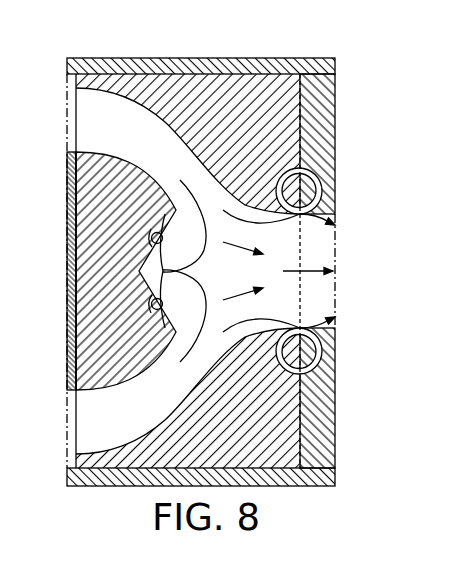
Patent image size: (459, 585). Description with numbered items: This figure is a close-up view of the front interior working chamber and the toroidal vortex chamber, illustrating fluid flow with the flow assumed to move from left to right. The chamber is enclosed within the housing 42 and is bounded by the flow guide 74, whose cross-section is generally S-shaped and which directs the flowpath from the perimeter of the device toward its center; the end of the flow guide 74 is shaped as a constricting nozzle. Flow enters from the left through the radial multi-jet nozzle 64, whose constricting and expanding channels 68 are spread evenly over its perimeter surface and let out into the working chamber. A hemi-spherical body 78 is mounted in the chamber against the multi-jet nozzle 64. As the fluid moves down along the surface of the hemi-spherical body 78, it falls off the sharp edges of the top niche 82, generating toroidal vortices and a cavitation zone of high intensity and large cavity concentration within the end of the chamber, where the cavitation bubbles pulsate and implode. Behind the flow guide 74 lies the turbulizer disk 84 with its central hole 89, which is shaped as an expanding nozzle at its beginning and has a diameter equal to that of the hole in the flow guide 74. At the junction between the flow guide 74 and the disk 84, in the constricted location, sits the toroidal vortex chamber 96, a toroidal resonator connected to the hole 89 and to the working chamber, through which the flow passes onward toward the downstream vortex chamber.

The housing 42 is at (195, 58).
The flow guide 74 is at (242, 85).
The turbulizer disk 84 is at (332, 428).
The toroidal vortex chamber 96 is at (320, 175).
The hemi-spherical body 78 is at (98, 364).
The radial multi-jet nozzle 64 is at (76, 290).
The constricting and expanding channels 68 is at (67, 432).
The top niche 82 is at (140, 262).
The central hole 89 is at (332, 298).